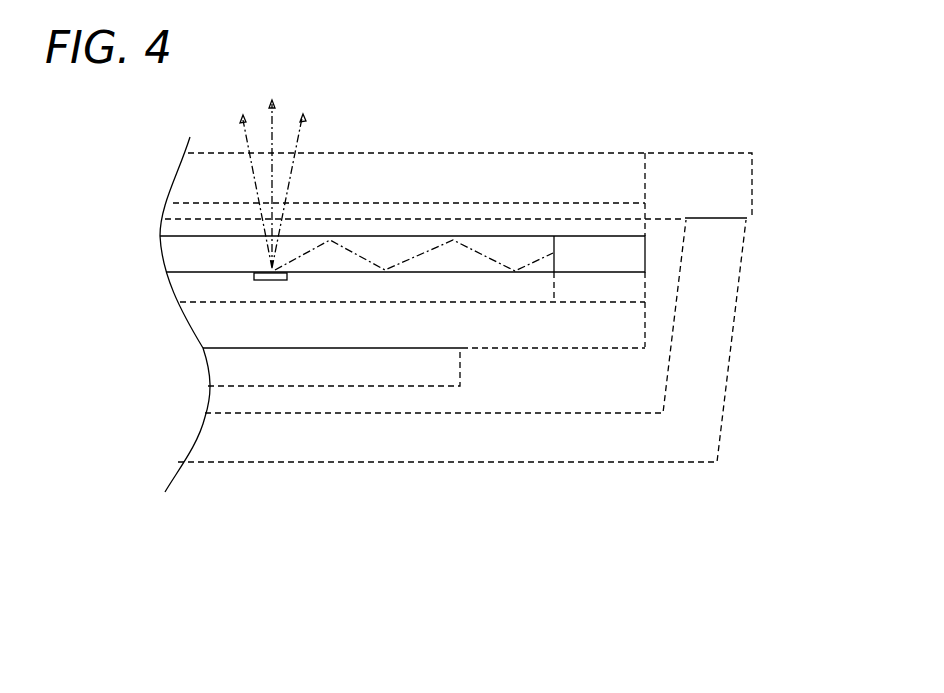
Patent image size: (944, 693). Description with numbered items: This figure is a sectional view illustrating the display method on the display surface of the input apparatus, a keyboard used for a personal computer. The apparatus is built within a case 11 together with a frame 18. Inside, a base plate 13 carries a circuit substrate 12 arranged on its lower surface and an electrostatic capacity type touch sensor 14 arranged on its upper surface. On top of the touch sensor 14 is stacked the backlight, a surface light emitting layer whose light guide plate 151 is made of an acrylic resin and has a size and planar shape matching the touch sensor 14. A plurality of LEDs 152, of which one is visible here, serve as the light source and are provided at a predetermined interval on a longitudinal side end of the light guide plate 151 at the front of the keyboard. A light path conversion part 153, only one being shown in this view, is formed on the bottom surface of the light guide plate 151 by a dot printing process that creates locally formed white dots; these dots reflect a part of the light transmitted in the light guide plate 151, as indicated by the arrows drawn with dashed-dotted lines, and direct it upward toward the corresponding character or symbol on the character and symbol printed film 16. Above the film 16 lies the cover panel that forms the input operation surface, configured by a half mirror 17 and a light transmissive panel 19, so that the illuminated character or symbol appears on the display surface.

The case 11 is at (740, 272).
The circuit substrate 12 is at (229, 367).
The base plate 13 is at (362, 328).
The electrostatic capacity type touch sensor 14 is at (411, 287).
The light guide plate 151 is at (473, 260).
The LED 152 is at (600, 257).
The light path conversion part 153 is at (272, 280).
The character and symbol printed film 16 is at (545, 218).
The half mirror 17 is at (350, 210).
The frame 18 is at (687, 162).
The light transmissive panel 19 is at (460, 173).